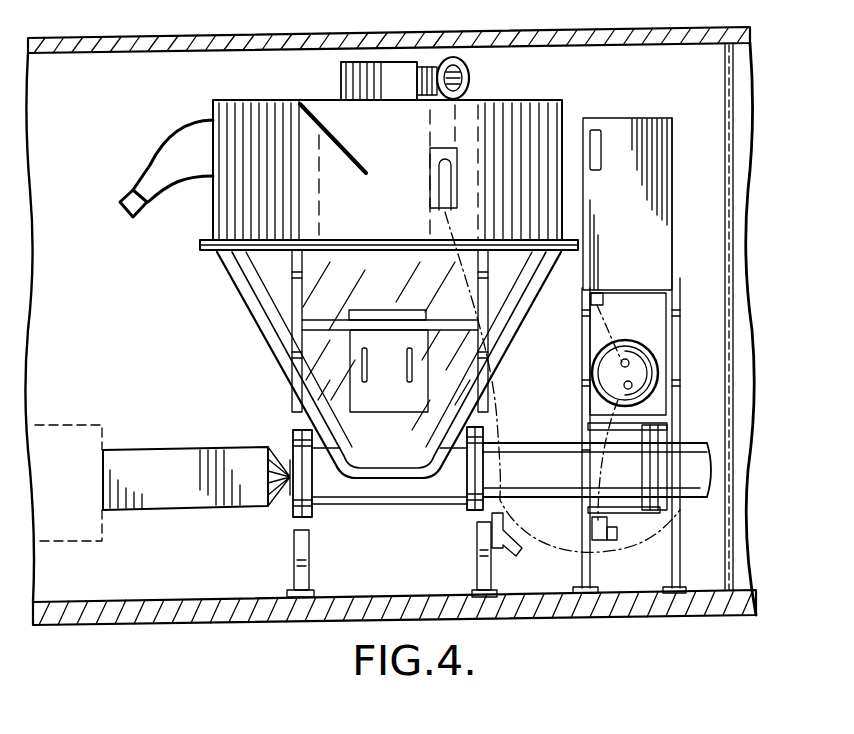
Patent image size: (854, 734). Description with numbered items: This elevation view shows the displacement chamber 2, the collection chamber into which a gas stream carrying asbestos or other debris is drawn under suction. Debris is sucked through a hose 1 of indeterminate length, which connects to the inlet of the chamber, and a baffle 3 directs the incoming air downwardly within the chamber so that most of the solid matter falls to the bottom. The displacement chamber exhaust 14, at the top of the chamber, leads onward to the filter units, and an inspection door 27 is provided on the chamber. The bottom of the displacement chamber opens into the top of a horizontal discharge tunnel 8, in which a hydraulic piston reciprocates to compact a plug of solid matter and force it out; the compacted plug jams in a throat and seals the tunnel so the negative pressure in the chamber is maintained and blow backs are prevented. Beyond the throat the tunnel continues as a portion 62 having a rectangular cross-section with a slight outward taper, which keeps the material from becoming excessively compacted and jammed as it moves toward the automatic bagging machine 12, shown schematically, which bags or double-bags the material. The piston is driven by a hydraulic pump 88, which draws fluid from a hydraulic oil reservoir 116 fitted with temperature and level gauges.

The hose 1 is at (155, 170).
The displacement chamber 2 is at (233, 283).
The baffle 3 is at (337, 122).
The discharge tunnel 8 is at (372, 503).
The automatic bagging machine 12 is at (85, 425).
The displacement chamber exhaust 14 is at (470, 77).
The inspection door 27 is at (374, 402).
The portion having a rectangular cross-section 62 is at (152, 500).
The hydraulic pump 88 is at (660, 398).
The hydraulic oil reservoir 116 is at (656, 228).